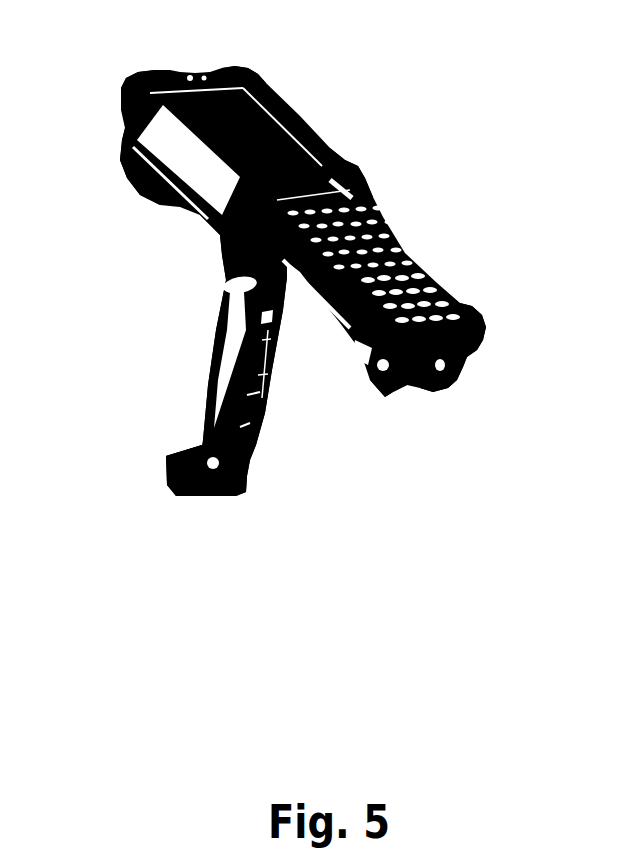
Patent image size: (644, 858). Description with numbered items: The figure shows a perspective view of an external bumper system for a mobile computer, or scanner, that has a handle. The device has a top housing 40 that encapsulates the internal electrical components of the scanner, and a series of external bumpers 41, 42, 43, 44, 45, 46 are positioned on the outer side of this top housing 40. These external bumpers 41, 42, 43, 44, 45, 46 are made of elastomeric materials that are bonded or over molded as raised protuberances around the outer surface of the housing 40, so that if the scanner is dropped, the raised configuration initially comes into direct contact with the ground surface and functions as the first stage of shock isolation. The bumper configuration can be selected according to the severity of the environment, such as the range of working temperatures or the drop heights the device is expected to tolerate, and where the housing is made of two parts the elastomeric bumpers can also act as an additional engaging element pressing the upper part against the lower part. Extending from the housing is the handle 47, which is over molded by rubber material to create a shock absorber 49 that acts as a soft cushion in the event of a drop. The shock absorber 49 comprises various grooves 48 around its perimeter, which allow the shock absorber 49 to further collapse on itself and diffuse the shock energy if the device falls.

The top housing 40 is at (461, 41).
The external bumper 41 is at (108, 139).
The external bumper 42 is at (270, 62).
The external bumper 43 is at (376, 172).
The external bumper 44 is at (476, 299).
The external bumper 45 is at (383, 394).
The external bumper 46 is at (208, 248).
The handle 47 is at (197, 365).
The grooves 48 is at (160, 496).
The shock absorber 49 is at (155, 452).